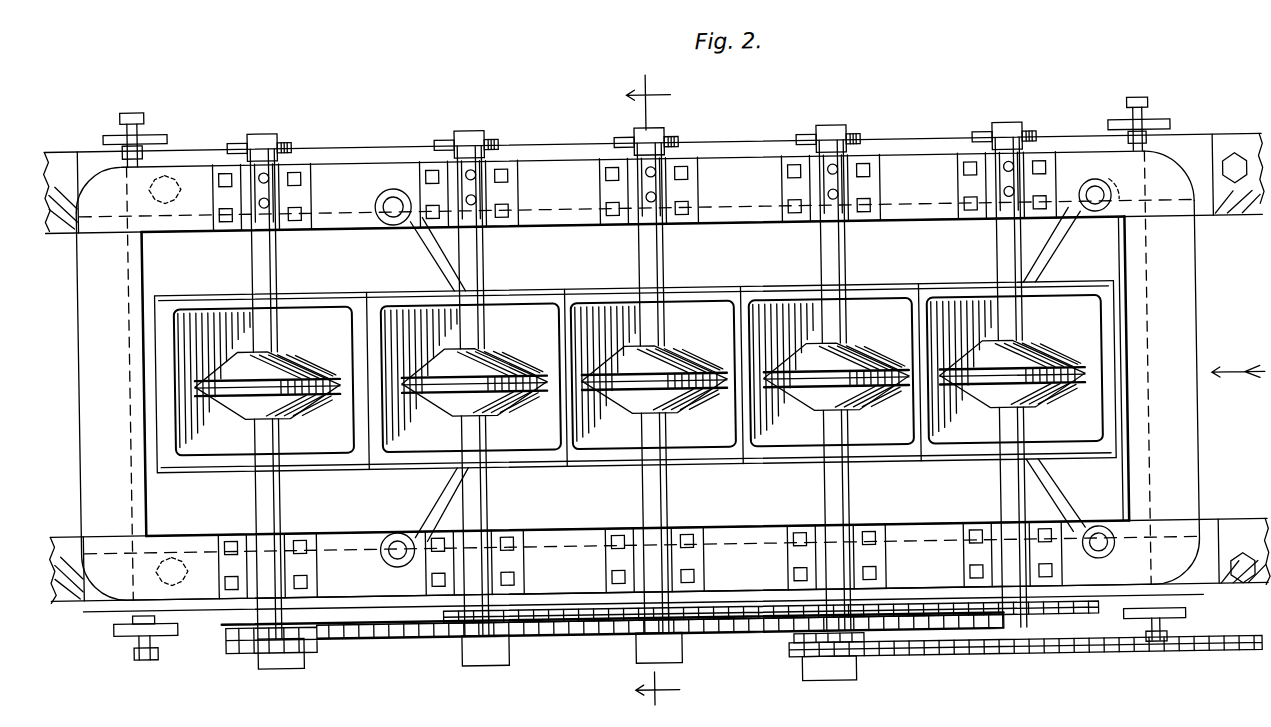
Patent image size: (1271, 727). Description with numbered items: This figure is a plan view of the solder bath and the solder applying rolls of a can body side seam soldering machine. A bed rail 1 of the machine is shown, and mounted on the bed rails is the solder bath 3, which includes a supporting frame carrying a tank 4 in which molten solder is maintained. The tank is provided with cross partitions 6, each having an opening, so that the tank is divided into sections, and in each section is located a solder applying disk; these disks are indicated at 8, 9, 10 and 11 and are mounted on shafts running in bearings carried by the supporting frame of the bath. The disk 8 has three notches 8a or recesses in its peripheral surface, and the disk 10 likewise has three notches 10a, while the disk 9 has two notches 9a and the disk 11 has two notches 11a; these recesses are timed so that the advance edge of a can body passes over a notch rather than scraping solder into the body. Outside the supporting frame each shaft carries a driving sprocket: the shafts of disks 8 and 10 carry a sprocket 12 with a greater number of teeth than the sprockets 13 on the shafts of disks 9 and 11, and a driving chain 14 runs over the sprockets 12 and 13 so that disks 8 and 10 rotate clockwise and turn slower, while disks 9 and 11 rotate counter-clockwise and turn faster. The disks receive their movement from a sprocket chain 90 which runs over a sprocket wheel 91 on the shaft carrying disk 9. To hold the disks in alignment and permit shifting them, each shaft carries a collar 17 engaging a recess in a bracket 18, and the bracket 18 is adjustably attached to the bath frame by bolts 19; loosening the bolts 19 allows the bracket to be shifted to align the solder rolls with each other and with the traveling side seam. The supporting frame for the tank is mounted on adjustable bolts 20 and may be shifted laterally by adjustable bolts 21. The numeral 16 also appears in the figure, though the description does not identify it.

The bed rail 1 is at (1195, 158).
The solder bath 3 is at (672, 388).
The tank 4 is at (410, 458).
The cross partition 6 is at (565, 301).
The solder applying disk 8 is at (988, 392).
The notch 8a is at (1040, 372).
The solder applying disk 9 is at (852, 366).
The notch 9a is at (815, 390).
The solder applying disk 10 is at (673, 366).
The notch 10a is at (640, 390).
The solder applying disk 11 is at (445, 400).
The notch 11a is at (491, 378).
The sprocket 12 is at (622, 636).
The sprocket 13 is at (254, 645).
The driving chain 14 is at (362, 634).
The roller 16 is at (296, 364).
The collar 17 is at (232, 140).
The bracket 18 is at (264, 128).
The bolt 19 is at (270, 190).
The adjustable bolt 20 is at (170, 216).
The adjustable bolt 21 is at (132, 105).
The sprocket chain 90 is at (1192, 659).
The sprocket wheel 91 is at (828, 683).